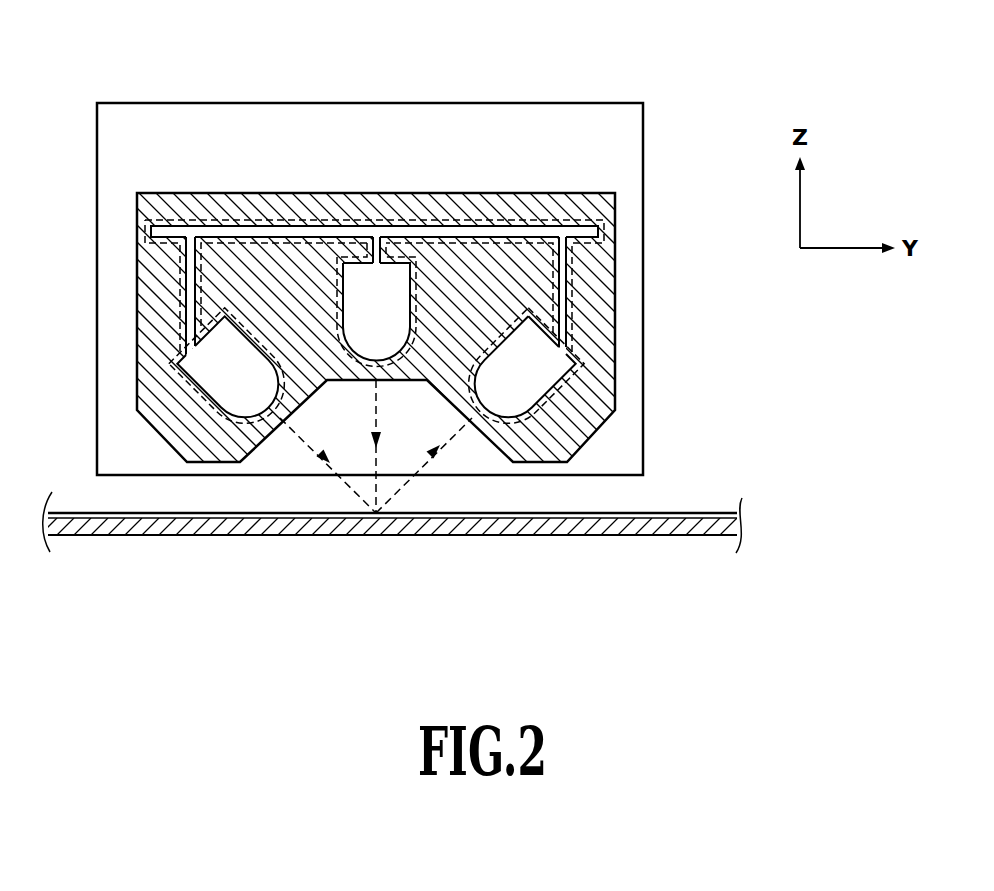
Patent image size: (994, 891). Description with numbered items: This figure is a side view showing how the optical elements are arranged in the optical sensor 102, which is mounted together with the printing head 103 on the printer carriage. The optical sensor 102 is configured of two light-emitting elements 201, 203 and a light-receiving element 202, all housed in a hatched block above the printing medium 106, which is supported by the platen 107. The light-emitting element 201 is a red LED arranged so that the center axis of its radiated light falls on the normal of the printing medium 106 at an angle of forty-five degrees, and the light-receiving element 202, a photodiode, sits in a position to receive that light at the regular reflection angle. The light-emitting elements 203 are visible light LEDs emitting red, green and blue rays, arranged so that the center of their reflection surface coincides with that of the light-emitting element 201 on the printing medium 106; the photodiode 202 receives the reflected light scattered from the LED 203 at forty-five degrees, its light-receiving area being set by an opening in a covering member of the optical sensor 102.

The printing head 103 is at (549, 103).
The optical sensor 102 is at (615, 210).
The light-emitting element 201 is at (186, 355).
The light-receiving element 202 is at (553, 372).
The light-emitting element 203 is at (388, 284).
The printing medium 106 is at (642, 513).
The platen 107 is at (602, 527).